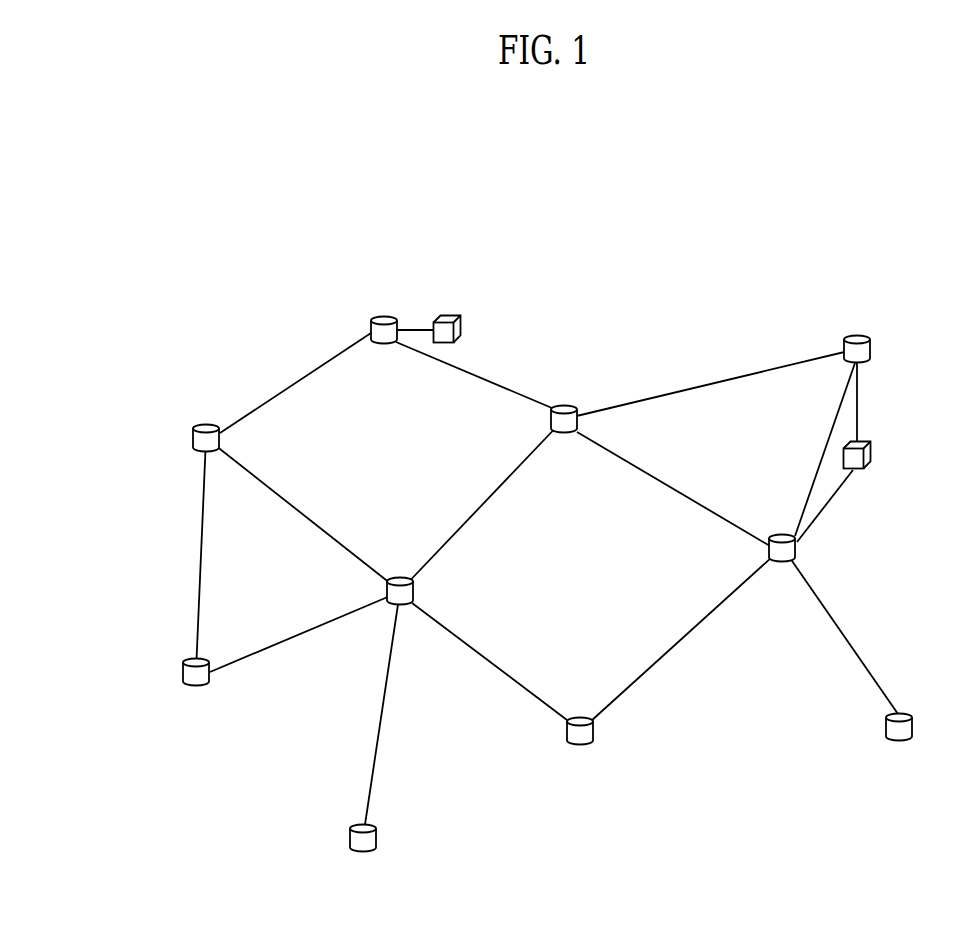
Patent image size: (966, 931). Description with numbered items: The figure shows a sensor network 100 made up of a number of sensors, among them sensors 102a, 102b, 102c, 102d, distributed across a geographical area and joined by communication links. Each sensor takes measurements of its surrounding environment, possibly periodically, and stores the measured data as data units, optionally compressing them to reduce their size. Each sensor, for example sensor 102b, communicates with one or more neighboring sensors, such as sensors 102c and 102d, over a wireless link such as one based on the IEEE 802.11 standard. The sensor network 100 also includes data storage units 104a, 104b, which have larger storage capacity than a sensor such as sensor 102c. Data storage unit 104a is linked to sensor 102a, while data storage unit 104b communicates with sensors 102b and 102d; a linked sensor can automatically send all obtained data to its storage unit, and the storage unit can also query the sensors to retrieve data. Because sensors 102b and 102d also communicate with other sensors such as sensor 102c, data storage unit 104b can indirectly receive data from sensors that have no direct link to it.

The sensor network 100 is at (208, 319).
The sensor 102a is at (398, 315).
The sensor 102b is at (869, 337).
The sensor 102c is at (577, 406).
The sensor 102d is at (771, 534).
The data storage unit 104a is at (460, 314).
The data storage unit 104b is at (871, 441).